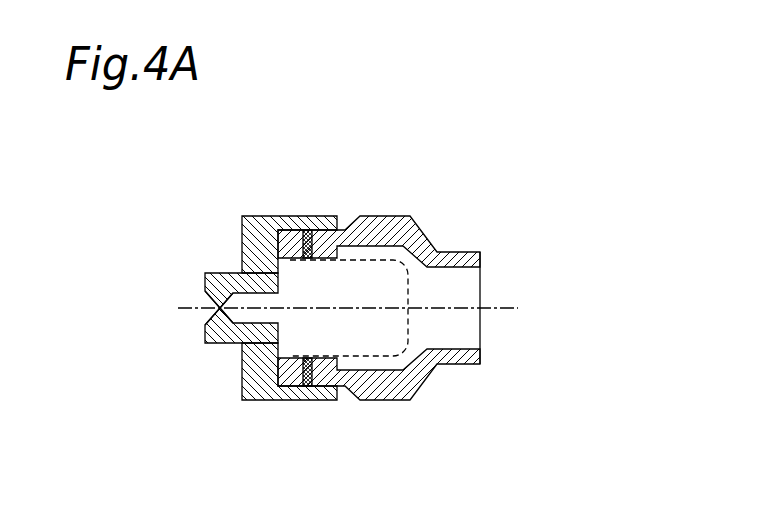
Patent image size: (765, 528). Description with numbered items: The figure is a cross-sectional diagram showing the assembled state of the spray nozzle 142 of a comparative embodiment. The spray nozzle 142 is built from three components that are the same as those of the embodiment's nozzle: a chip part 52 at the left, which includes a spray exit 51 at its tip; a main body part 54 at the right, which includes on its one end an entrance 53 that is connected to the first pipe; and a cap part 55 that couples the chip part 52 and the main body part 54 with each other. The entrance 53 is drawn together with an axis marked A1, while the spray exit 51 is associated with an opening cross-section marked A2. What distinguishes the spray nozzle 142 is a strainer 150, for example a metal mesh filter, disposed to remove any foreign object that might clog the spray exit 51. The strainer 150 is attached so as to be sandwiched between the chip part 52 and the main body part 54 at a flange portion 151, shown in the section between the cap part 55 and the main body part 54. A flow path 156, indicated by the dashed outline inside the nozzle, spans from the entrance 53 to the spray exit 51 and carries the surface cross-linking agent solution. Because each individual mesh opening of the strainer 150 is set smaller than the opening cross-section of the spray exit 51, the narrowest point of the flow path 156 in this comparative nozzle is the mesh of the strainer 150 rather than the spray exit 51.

The spray nozzle 142 is at (466, 190).
The cap part 55 is at (270, 216).
The chip part 52 is at (225, 345).
The spray exit 51 is at (226, 306).
The strainer 150 is at (400, 216).
The flange portion 151 is at (337, 216).
The main body part 54 is at (452, 366).
The flow path 156 is at (352, 348).
The entrance 53 is at (481, 292).